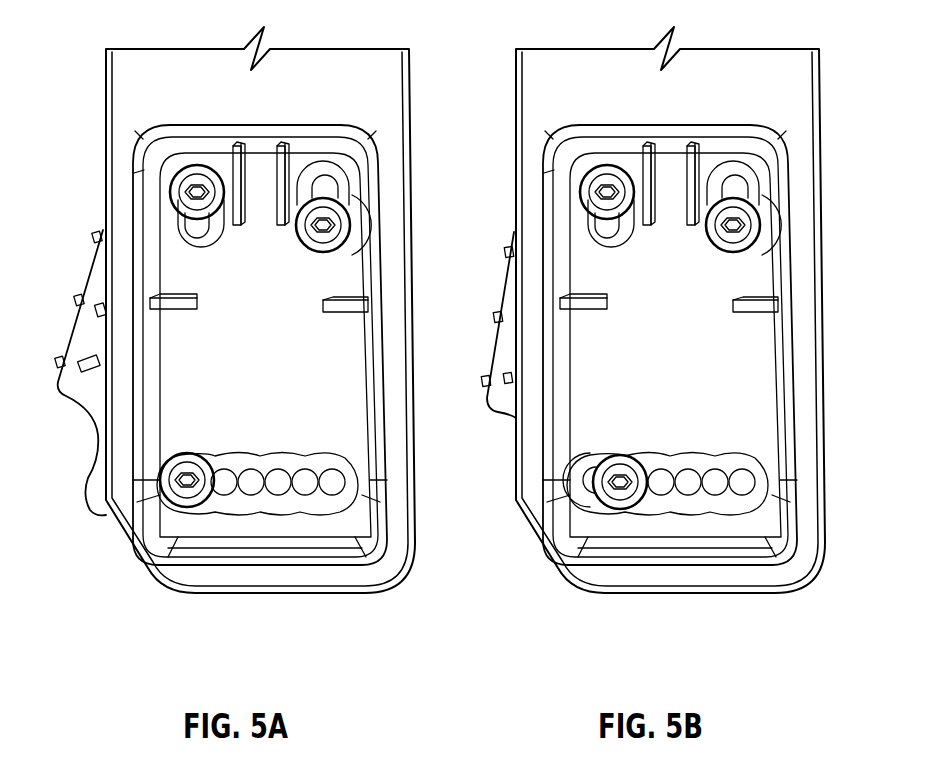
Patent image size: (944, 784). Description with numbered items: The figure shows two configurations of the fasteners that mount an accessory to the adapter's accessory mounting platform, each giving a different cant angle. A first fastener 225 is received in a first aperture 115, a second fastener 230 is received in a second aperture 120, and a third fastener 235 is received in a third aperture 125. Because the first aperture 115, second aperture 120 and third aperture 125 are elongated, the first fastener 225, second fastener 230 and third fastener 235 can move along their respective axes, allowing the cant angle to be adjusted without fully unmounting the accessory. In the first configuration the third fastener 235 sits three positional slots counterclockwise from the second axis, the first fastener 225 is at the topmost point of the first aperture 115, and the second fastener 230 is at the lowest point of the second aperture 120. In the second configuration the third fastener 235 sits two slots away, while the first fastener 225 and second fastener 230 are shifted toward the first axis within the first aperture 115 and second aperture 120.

In FIG. 5A, the first aperture 115 is at (193, 227).
In FIG. 5B, the first aperture 115 is at (629, 310).
In FIG. 5A, the second aperture 120 is at (330, 188).
In FIG. 5B, the second aperture 120 is at (723, 341).
In FIG. 5A, the third aperture 125 is at (284, 480).
In FIG. 5B, the third aperture 125 is at (665, 552).
In FIG. 5A, the first fastener 225 is at (197, 183).
In FIG. 5B, the first fastener 225 is at (584, 153).
In FIG. 5A, the second fastener 230 is at (326, 183).
In FIG. 5B, the second fastener 230 is at (728, 157).
In FIG. 5A, the third fastener 235 is at (187, 484).
In FIG. 5B, the third fastener 235 is at (576, 544).